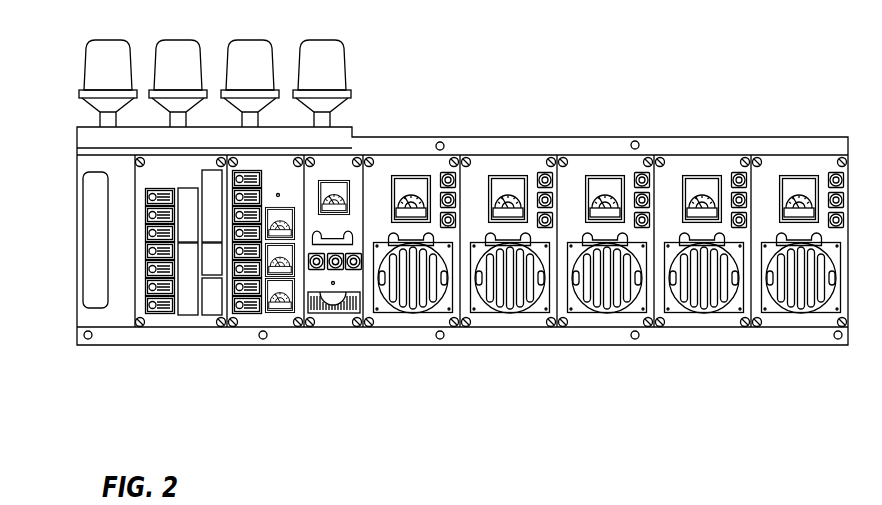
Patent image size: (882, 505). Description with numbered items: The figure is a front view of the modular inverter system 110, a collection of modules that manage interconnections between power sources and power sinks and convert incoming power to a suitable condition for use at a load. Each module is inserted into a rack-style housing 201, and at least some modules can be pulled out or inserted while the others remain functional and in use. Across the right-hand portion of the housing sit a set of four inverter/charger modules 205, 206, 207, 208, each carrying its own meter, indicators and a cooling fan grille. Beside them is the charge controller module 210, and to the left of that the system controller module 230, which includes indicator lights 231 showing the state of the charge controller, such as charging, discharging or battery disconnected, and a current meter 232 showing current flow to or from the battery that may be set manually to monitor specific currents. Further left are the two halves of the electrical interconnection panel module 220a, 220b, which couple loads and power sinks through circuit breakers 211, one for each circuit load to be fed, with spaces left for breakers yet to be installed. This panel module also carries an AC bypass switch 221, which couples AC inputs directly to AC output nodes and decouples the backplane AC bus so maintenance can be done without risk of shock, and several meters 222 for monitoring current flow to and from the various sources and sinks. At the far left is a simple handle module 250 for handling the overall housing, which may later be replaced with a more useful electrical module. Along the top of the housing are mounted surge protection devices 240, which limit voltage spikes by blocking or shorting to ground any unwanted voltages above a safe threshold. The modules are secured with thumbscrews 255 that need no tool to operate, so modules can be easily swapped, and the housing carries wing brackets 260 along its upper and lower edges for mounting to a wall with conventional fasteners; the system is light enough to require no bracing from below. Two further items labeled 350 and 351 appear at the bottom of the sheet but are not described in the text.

The modular inverter system 110 is at (378, 430).
The rack-style housing 201 is at (535, 130).
The inverter/charger module 205 is at (793, 330).
The inverter/charger module 206 is at (710, 330).
The inverter/charger module 207 is at (608, 330).
The inverter/charger module 208 is at (508, 330).
The charge controller module 210 is at (420, 330).
The circuit breakers 211 is at (106, 286).
The electrical panel module 220a is at (126, 286).
The electrical panel module 220b is at (268, 291).
The AC bypass switch 221 is at (143, 212).
The meters 222 is at (279, 312).
The system controller module 230 is at (378, 256).
The indicator lights 231 is at (343, 251).
The current meter 232 is at (341, 182).
The surge protection devices 240 is at (348, 68).
The handle module 250 is at (97, 283).
The thumbscrews 255 is at (762, 152).
The wing brackets 260 is at (680, 143).
The element 350 is at (665, 495).
The element 351 is at (718, 504).